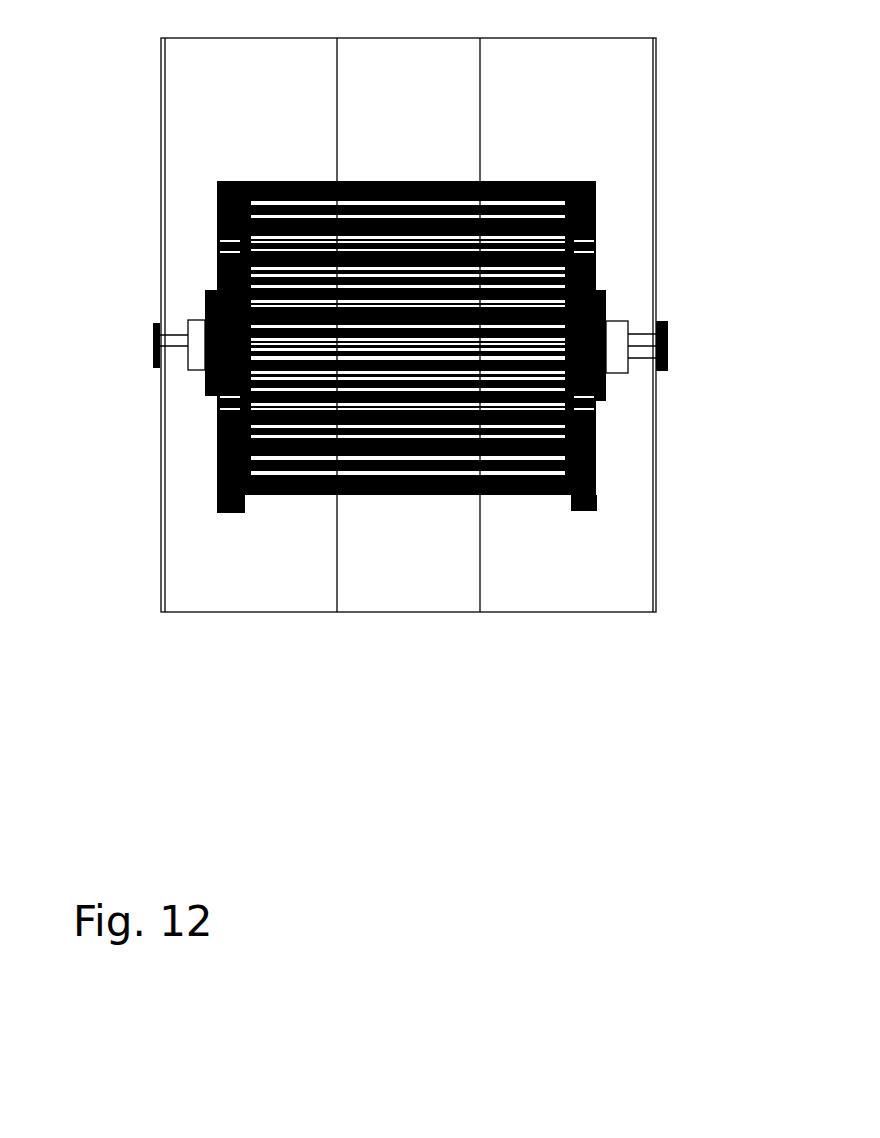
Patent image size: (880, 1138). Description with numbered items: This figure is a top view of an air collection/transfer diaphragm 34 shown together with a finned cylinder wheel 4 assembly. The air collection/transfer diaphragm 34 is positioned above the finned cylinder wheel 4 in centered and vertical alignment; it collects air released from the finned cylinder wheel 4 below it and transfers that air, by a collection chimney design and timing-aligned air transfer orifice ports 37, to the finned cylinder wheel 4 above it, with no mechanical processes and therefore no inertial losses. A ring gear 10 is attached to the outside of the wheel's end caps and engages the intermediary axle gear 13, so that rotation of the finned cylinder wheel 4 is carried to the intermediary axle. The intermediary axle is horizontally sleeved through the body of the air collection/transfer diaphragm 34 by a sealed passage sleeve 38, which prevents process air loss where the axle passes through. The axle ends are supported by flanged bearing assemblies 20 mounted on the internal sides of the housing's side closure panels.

The finned cylinder wheel 4 is at (359, 487).
The ring gear 10 is at (588, 223).
The intermediary axle gear 13 is at (598, 292).
The flanged bearing assembly 20 is at (660, 337).
The air collection/transfer diaphragm 34 is at (196, 554).
The air transfer orifice ports 37 is at (197, 282).
The sealed passage sleeve 38 is at (455, 487).